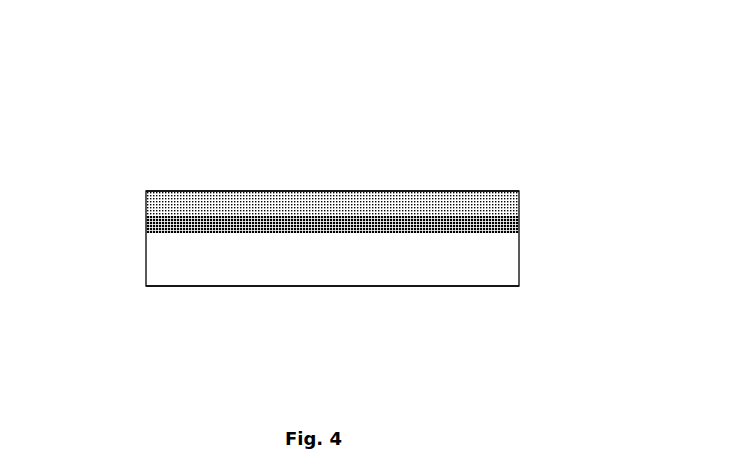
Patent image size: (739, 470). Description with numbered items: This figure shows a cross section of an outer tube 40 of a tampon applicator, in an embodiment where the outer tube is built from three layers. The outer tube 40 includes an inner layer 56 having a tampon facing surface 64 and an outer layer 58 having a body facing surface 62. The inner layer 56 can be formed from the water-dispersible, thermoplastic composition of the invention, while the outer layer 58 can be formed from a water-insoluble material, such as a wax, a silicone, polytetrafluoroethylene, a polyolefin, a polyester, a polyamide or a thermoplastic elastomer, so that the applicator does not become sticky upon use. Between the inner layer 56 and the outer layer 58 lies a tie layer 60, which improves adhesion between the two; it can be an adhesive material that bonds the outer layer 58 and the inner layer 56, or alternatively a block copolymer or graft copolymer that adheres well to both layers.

The outer tube 40 is at (325, 180).
The inner layer 56 is at (488, 252).
The outer layer 58 is at (497, 205).
The tie layer 60 is at (147, 225).
The body facing surface 62 is at (245, 191).
The tampon facing surface 64 is at (270, 286).